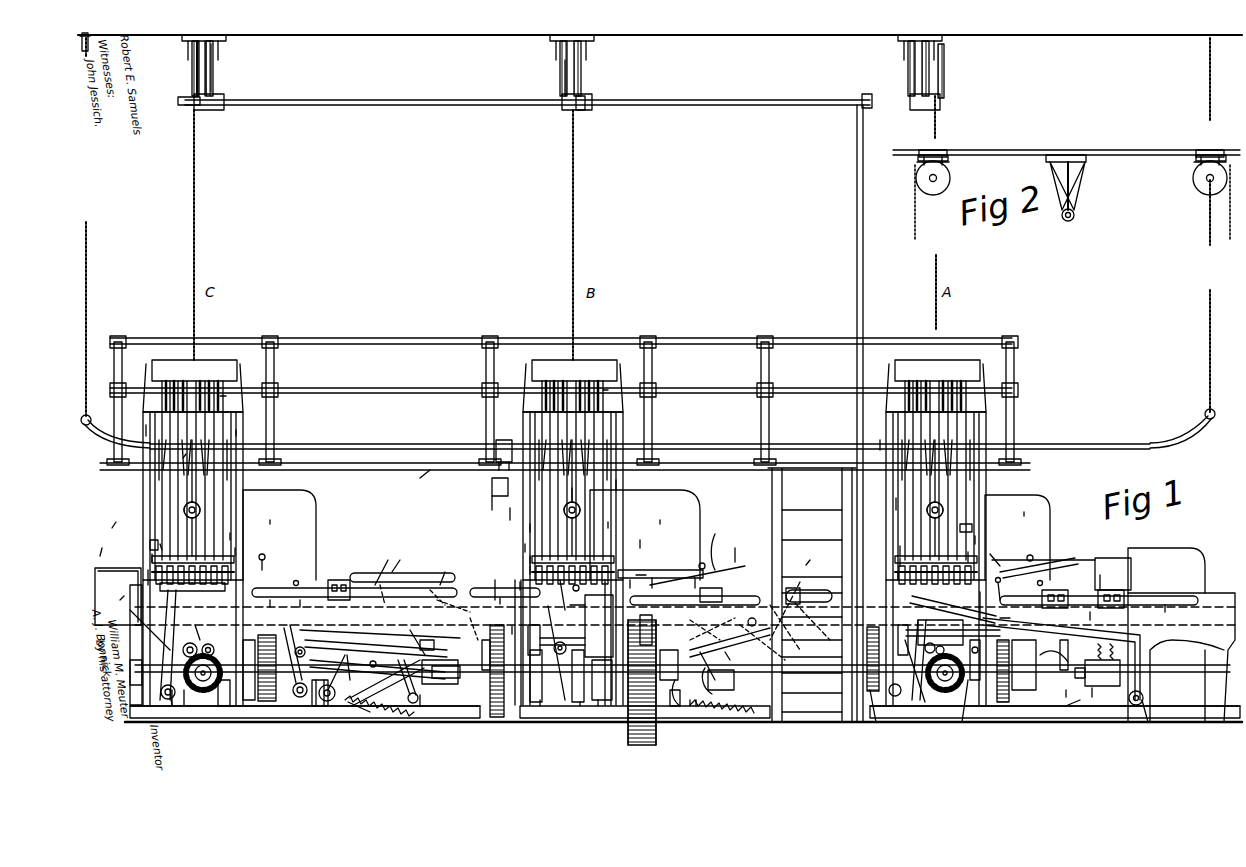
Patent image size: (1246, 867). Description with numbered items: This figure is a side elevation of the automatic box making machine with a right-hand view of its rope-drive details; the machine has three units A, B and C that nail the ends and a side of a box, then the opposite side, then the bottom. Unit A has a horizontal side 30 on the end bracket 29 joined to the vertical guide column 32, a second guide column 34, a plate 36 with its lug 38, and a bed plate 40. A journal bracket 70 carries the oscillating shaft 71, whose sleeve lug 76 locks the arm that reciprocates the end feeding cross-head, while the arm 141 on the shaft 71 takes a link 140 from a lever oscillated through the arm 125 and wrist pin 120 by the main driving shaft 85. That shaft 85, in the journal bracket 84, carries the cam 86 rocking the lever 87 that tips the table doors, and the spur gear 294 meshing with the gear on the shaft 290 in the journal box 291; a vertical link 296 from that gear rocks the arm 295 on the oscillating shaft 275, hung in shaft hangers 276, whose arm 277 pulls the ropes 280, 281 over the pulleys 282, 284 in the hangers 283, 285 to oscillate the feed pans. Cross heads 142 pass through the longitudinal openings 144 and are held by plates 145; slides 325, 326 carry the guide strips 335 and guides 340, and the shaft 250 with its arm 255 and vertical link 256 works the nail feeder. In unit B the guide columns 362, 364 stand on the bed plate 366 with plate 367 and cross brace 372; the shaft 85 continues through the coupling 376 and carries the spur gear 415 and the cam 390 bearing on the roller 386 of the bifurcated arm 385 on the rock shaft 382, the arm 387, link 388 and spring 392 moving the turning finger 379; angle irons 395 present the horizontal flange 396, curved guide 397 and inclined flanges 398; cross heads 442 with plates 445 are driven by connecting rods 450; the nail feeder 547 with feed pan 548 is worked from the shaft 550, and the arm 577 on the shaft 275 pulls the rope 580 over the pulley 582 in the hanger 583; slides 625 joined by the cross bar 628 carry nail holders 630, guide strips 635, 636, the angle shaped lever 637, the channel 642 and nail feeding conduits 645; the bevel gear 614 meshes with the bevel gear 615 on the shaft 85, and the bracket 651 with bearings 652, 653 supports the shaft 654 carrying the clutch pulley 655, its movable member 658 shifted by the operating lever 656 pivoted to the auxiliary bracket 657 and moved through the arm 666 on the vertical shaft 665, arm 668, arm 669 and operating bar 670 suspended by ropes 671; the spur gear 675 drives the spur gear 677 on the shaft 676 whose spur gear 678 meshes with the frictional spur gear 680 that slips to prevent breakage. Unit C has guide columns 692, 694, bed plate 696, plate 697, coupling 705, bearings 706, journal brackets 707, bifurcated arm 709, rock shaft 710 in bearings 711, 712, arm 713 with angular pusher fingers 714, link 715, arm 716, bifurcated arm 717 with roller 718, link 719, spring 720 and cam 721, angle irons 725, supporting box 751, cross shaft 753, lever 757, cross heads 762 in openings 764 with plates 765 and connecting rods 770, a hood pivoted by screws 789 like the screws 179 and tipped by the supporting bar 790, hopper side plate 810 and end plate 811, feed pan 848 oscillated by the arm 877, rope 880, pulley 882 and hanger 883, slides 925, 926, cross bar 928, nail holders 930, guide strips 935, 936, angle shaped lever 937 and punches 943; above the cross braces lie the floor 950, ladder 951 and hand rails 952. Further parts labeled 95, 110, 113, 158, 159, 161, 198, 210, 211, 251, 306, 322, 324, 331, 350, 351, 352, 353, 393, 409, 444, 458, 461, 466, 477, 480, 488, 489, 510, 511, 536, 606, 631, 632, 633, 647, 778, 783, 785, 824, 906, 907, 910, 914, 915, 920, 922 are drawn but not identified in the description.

In FIG. 1, the end bracket 29 is at (1206, 703).
In FIG. 1, the horizontal side 30 is at (1181, 657).
In FIG. 1, the vertical guide column 32 is at (982, 440).
In FIG. 1, the guide column 34 is at (880, 440).
In FIG. 1, the plate 36 is at (953, 607).
In FIG. 1, the lug 38 is at (940, 646).
In FIG. 1, the bed plate 40 is at (1055, 714).
In FIG. 1, the journal bracket 70 is at (1135, 722).
In FIG. 1, the oscillating shaft 71 is at (1126, 698).
In FIG. 1, the lug 76 is at (1144, 695).
In FIG. 1, the journal bracket 84 is at (1057, 655).
In FIG. 1, the main driving shaft 85 is at (1065, 697).
In FIG. 1, the cam 86 is at (1091, 696).
In FIG. 1, the lever 87 is at (1100, 660).
In FIG. 1, the head frame 95 is at (1166, 570).
In FIG. 1, the bracket 110 is at (1113, 567).
In FIG. 1, the bearing 113 is at (1024, 665).
In FIG. 1, the wrist pin 120 is at (1009, 633).
In FIG. 1, the arm 125 is at (1016, 700).
In FIG. 1, the link 140 is at (1089, 620).
In FIG. 1, the arm 141 is at (1138, 657).
In FIG. 1, the cross heads 142 is at (910, 671).
In FIG. 1, the longitudinal openings 144 is at (1171, 615).
In FIG. 1, the plates 145 is at (1099, 607).
In FIG. 1, the bar 158 is at (1060, 562).
In FIG. 1, the pin 159 is at (1010, 588).
In FIG. 1, the link 161 is at (1039, 562).
In FIG. 1, the screws 179 is at (1050, 582).
In FIG. 1, the bracket 198 is at (1070, 708).
In FIG. 1, the casing 210 is at (1052, 516).
In FIG. 1, the casing top 211 is at (1022, 507).
In FIG. 1, the short horizontal shaft 250 is at (970, 528).
In FIG. 1, the plate 251 is at (975, 540).
In FIG. 1, the arm 255 is at (900, 550).
In FIG. 1, the vertical link 256 is at (896, 503).
In FIG. 1, the oscillating shaft 275 is at (735, 103).
In FIG. 2, the oscillating shaft 275 is at (1076, 221).
In FIG. 1, the shaft hangers 276 is at (222, 70).
In FIG. 2, the shaft hangers 276 is at (1052, 180).
In FIG. 1, the arm 277 is at (937, 92).
In FIG. 2, the arm 277 is at (1076, 193).
In FIG. 1, the rope 280 is at (938, 130).
In FIG. 2, the rope 280 is at (915, 221).
In FIG. 2, the rope 281 is at (1228, 238).
In FIG. 2, the pulley 282 is at (916, 179).
In FIG. 2, the hanger 283 is at (915, 159).
In FIG. 2, the pulley 284 is at (1194, 193).
In FIG. 2, the hanger 285 is at (1196, 177).
In FIG. 1, the shaft 290 is at (962, 722).
In FIG. 1, the journal box 291 is at (986, 660).
In FIG. 1, the spur gear 294 is at (878, 722).
In FIG. 1, the arm 295 is at (866, 96).
In FIG. 1, the vertical link 296 is at (857, 284).
In FIG. 1, the disc 306 is at (933, 497).
In FIG. 1, the block 322 is at (937, 659).
In FIG. 1, the link 324 is at (704, 658).
In FIG. 1, the slide 325 is at (900, 560).
In FIG. 1, the slide 326 is at (975, 556).
In FIG. 1, the link 331 is at (246, 595).
In FIG. 1, the guide strips 335 is at (898, 574).
In FIG. 1, the guide 340 is at (726, 589).
In FIG. 1, the rod 350 is at (104, 548).
In FIG. 1, the link 351 is at (798, 580).
In FIG. 1, the rod 352 is at (400, 560).
In FIG. 1, the rod 353 is at (110, 538).
In FIG. 1, the guide column 362 is at (622, 486).
In FIG. 1, the guide column 364 is at (508, 435).
In FIG. 1, the bed plate 366 is at (545, 706).
In FIG. 1, the plate 367 is at (565, 595).
In FIG. 1, the cross brace 372 is at (728, 649).
In FIG. 1, the coupling 376 is at (715, 690).
In FIG. 1, the turning finger 379 is at (800, 625).
In FIG. 1, the rock shaft 382 is at (730, 639).
In FIG. 1, the bifurcated arm 385 is at (672, 658).
In FIG. 1, the roller 386 is at (679, 693).
In FIG. 1, the arm 387 is at (780, 650).
In FIG. 1, the link 388 is at (718, 681).
In FIG. 1, the cam 390 is at (676, 706).
In FIG. 1, the spring 392 is at (714, 710).
In FIG. 1, the link 393 is at (453, 614).
In FIG. 1, the angle irons 395 is at (462, 627).
In FIG. 1, the horizontal flange 396 is at (699, 623).
In FIG. 1, the curved guide 397 is at (753, 632).
In FIG. 1, the horizontal flanges 398 is at (431, 603).
In FIG. 1, the bracket 409 is at (1112, 581).
In FIG. 1, the spur gear 415 is at (616, 706).
In FIG. 1, the cross heads 442 is at (712, 623).
In FIG. 1, the bar 444 is at (695, 598).
In FIG. 1, the plates 445 is at (698, 583).
In FIG. 1, the connecting rods 450 is at (652, 582).
In FIG. 1, the arm 458 is at (728, 548).
In FIG. 1, the bar 461 is at (700, 565).
In FIG. 1, the bar 466 is at (832, 585).
In FIG. 1, the bar 477 is at (700, 572).
In FIG. 1, the pin 480 is at (640, 575).
In FIG. 1, the pin 488 is at (641, 537).
In FIG. 1, the arm 489 is at (716, 545).
In FIG. 1, the casing 510 is at (692, 510).
In FIG. 1, the casing top 511 is at (666, 515).
In FIG. 1, the pin 536 is at (998, 612).
In FIG. 1, the nail feeder 547 is at (605, 390).
In FIG. 1, the oscillating feed pan 548 is at (573, 532).
In FIG. 1, the short horizontal shaft 550 is at (612, 524).
In FIG. 1, the arm 577 is at (583, 88).
In FIG. 1, the rope 580 is at (575, 137).
In FIG. 1, the pulley 582 is at (565, 84).
In FIG. 1, the hanger 583 is at (586, 55).
In FIG. 1, the disc 606 is at (572, 502).
In FIG. 1, the bevel gear 614 is at (578, 711).
In FIG. 1, the bevel gear 615 is at (600, 710).
In FIG. 1, the slides 625 is at (530, 570).
In FIG. 1, the cross bar 628 is at (530, 560).
In FIG. 1, the nail holders 630 is at (495, 580).
In FIG. 1, the pin 631 is at (631, 583).
In FIG. 1, the bar 632 is at (512, 630).
In FIG. 1, the gear 633 is at (556, 652).
In FIG. 1, the guide strips 635 is at (520, 585).
In FIG. 1, the guide strips 636 is at (597, 625).
In FIG. 1, the angle shaped lever 637 is at (525, 548).
In FIG. 1, the channel 642 is at (530, 528).
In FIG. 1, the nail feeding conduits 645 is at (573, 488).
In FIG. 1, the rod 647 is at (222, 400).
In FIG. 1, the bracket 651 is at (492, 600).
In FIG. 1, the bearings 652 is at (655, 624).
In FIG. 1, the bearings 653 is at (529, 710).
In FIG. 1, the short horizontal shaft 654 is at (570, 634).
In FIG. 1, the pulley 655 is at (607, 685).
In FIG. 1, the operating lever 656 is at (575, 706).
In FIG. 1, the auxiliary bracket 657 is at (540, 676).
In FIG. 1, the movable member 658 is at (545, 639).
In FIG. 1, the vertical shaft 665 is at (510, 512).
In FIG. 1, the arm 666 is at (500, 596).
In FIG. 1, the arm 668 is at (492, 492).
In FIG. 1, the arm 669 is at (480, 484).
In FIG. 1, the operating bar 670 is at (723, 447).
In FIG. 1, the chains or ropes 671 is at (88, 297).
In FIG. 1, the spur gear 675 is at (585, 612).
In FIG. 1, the shaft 676 is at (581, 676).
In FIG. 1, the spur gear 677 is at (648, 745).
In FIG. 1, the spur gear 678 is at (486, 700).
In FIG. 1, the frictional spur gear 680 is at (488, 654).
In FIG. 1, the guide column 692 is at (240, 432).
In FIG. 1, the guide column 694 is at (146, 430).
In FIG. 1, the bed plate 696 is at (196, 714).
In FIG. 1, the plate 697 is at (170, 600).
In FIG. 1, the coupling 705 is at (438, 684).
In FIG. 1, the bearings 706 is at (138, 655).
In FIG. 1, the journal brackets 707 is at (420, 642).
In FIG. 1, the bifurcated arm 709 is at (420, 705).
In FIG. 1, the rock shaft 710 is at (340, 706).
In FIG. 1, the bearing 711 is at (318, 706).
In FIG. 1, the bearing 712 is at (331, 672).
In FIG. 1, the arm 713 is at (360, 712).
In FIG. 1, the angular pusher fingers 714 is at (362, 630).
In FIG. 1, the link 715 is at (404, 700).
In FIG. 1, the arm 716 is at (428, 650).
In FIG. 1, the bifurcated arm 717 is at (376, 646).
In FIG. 1, the roller 718 is at (377, 669).
In FIG. 1, the link 719 is at (361, 667).
In FIG. 1, the spring 720 is at (350, 700).
In FIG. 1, the cam 721 is at (294, 661).
In FIG. 1, the angle irons 725 is at (130, 625).
In FIG. 1, the supporting box 751 is at (178, 706).
In FIG. 1, the short cross shaft 753 is at (168, 700).
In FIG. 1, the lever 757 is at (168, 636).
In FIG. 1, the cross heads 762 is at (350, 572).
In FIG. 1, the longitudinal openings 764 is at (395, 590).
In FIG. 1, the plates 765 is at (388, 560).
In FIG. 1, the connecting rods 770 is at (298, 608).
In FIG. 1, the pin 778 is at (288, 560).
In FIG. 1, the link 783 is at (447, 572).
In FIG. 1, the pin 785 is at (268, 608).
In FIG. 1, the screws 789 is at (307, 581).
In FIG. 1, the supporting bar 790 is at (245, 586).
In FIG. 1, the side plate 810 is at (316, 525).
In FIG. 1, the end plate 811 is at (271, 515).
In FIG. 1, the pin 824 is at (312, 651).
In FIG. 1, the oscillating feed pan 848 is at (193, 532).
In FIG. 1, the arm 877 is at (205, 108).
In FIG. 1, the rope 880 is at (197, 202).
In FIG. 1, the pulley 882 is at (213, 84).
In FIG. 1, the hanger 883 is at (214, 52).
In FIG. 1, the disc 906 is at (194, 496).
In FIG. 1, the link 907 is at (193, 627).
In FIG. 1, the ratchet wheel 910 is at (205, 678).
In FIG. 1, the link 914 is at (172, 706).
In FIG. 1, the bearing 915 is at (222, 695).
In FIG. 1, the roller 920 is at (175, 651).
In FIG. 1, the roller 922 is at (200, 648).
In FIG. 1, the slides 925 is at (150, 546).
In FIG. 1, the slides 926 is at (232, 535).
In FIG. 1, the cross bar 928 is at (163, 540).
In FIG. 1, the nail holders 930 is at (238, 550).
In FIG. 1, the guide strips 935 is at (148, 578).
In FIG. 1, the guide strips 936 is at (165, 575).
In FIG. 1, the angle shaped lever 937 is at (152, 558).
In FIG. 1, the punches 943 is at (195, 457).
In FIG. 1, the floor 950 is at (420, 478).
In FIG. 1, the ladder 951 is at (820, 512).
In FIG. 1, the hand rails 952 is at (700, 352).